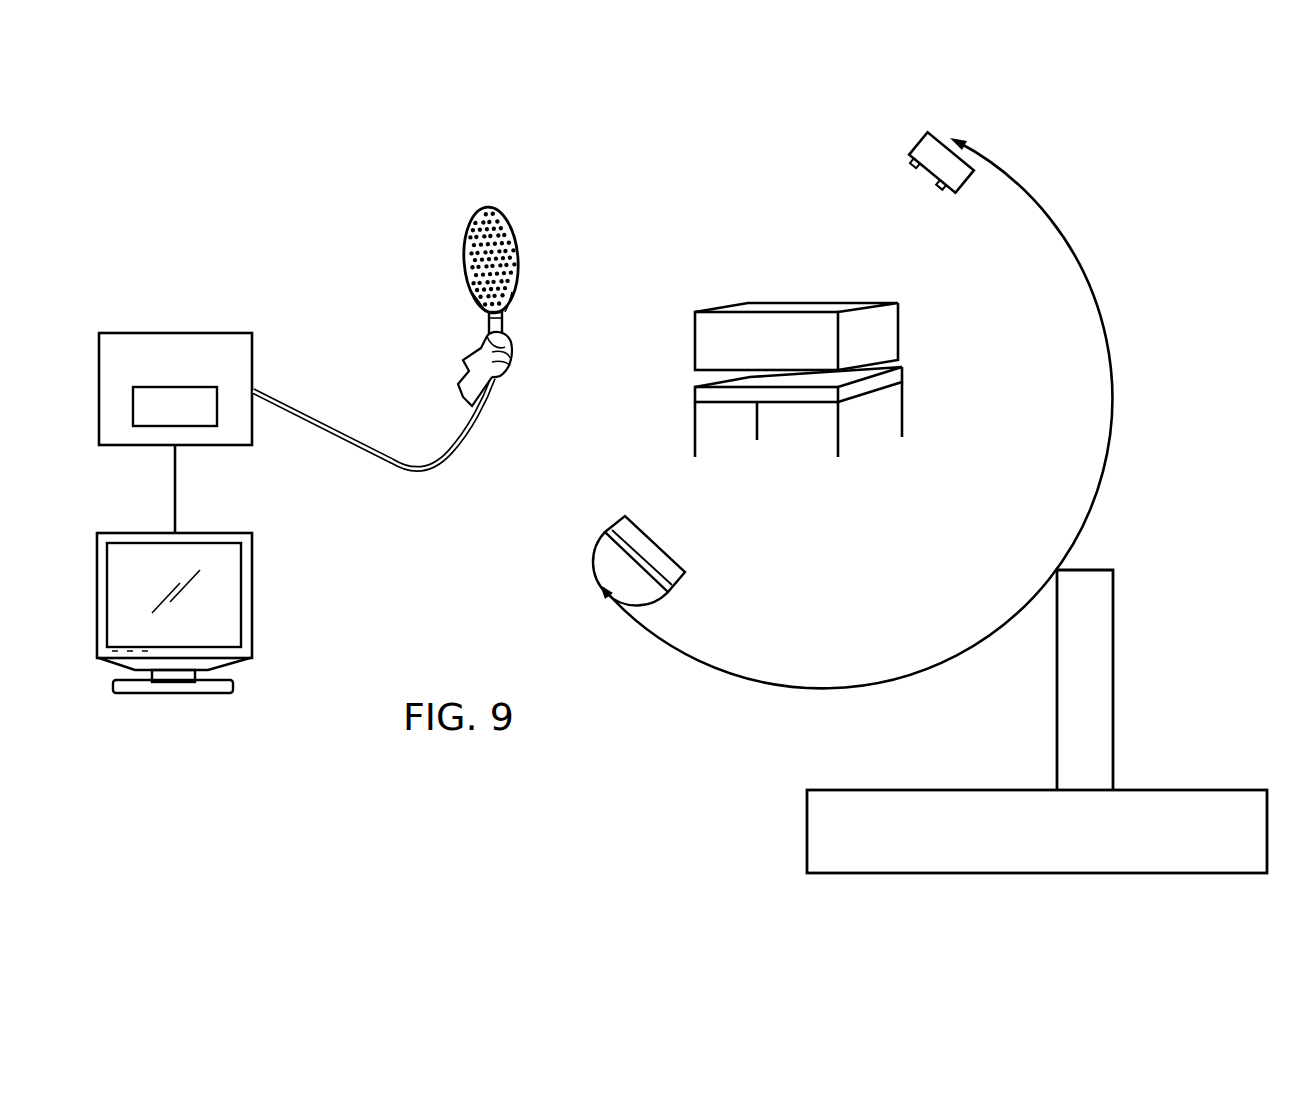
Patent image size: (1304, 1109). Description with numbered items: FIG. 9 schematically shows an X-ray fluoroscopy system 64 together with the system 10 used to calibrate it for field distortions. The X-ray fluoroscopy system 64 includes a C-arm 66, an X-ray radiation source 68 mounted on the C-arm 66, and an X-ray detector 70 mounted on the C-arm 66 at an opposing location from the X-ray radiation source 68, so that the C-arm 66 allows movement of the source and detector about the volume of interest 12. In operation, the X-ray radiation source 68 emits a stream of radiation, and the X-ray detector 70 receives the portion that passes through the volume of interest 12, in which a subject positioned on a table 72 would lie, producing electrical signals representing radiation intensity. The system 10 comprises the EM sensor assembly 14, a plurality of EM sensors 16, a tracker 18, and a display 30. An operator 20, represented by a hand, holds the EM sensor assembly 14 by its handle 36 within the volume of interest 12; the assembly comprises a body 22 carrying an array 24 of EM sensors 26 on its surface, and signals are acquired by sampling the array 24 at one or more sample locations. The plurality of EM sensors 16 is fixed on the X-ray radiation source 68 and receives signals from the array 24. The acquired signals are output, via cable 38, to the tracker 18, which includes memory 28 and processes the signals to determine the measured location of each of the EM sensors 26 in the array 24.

The system 10 is at (282, 166).
The volume of interest 12 is at (900, 318).
The EM sensor assembly 14 is at (480, 264).
The plurality of EM sensors 16 is at (918, 150).
The tracker 18 is at (175, 375).
The operator 20 is at (465, 366).
The body 22 is at (468, 292).
The array 24 is at (505, 212).
The EM sensors 26 is at (512, 296).
The memory 28 is at (175, 406).
The display 30 is at (231, 532).
The handle / neck 36 is at (487, 327).
The cable 38 is at (410, 478).
The X-ray fluoroscopy system 64 is at (1114, 327).
The C-arm 66 is at (1042, 210).
The X-ray radiation source 68 is at (903, 183).
The X-ray detector 70 is at (684, 578).
The table 72 is at (902, 380).